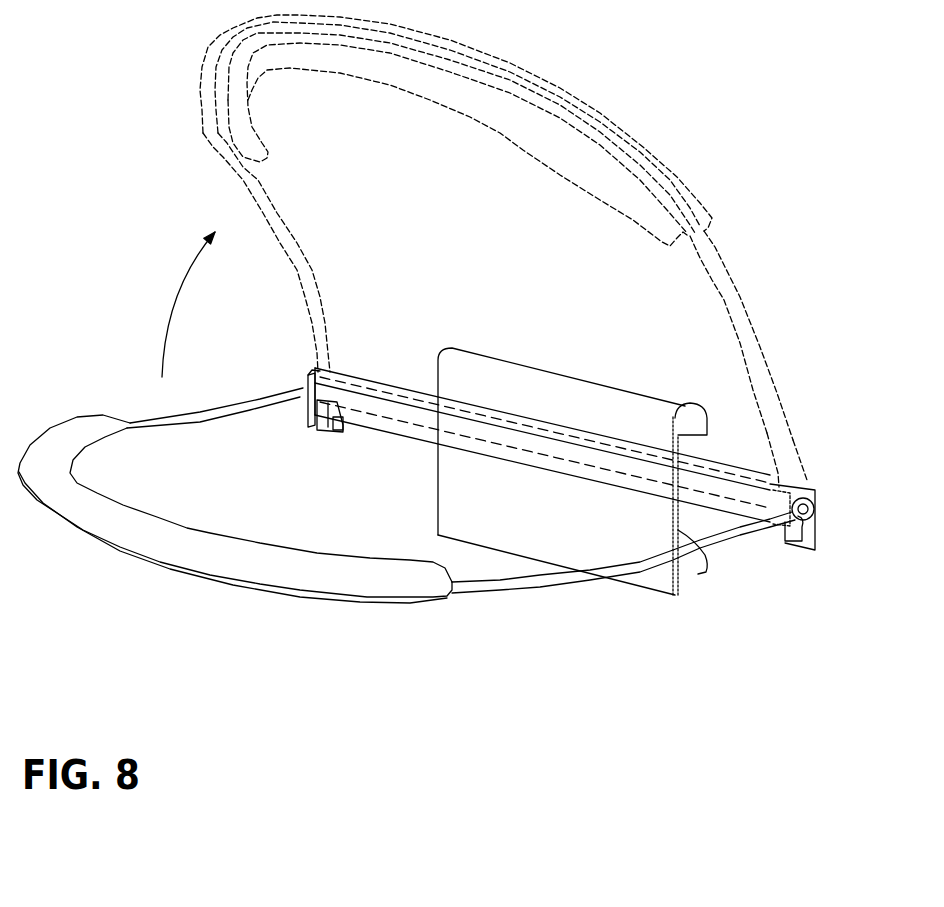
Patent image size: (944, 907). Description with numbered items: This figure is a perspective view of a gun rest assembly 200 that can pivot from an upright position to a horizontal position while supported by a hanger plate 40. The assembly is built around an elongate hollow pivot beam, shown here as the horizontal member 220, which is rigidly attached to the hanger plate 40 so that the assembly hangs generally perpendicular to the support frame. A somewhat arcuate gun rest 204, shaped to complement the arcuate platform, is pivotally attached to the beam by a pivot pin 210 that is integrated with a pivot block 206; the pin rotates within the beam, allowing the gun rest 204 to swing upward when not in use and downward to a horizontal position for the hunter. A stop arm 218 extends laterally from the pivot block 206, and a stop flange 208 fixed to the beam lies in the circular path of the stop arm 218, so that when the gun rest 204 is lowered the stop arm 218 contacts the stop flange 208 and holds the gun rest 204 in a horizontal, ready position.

The gun rest assembly 200 is at (62, 50).
The support bar 220 is at (395, 385).
The hanger plate 40 is at (590, 380).
The gun rest 204 is at (262, 590).
The stop flange 208 is at (297, 423).
The stop arm 218 is at (328, 432).
The pivot block 206 is at (805, 482).
The pivot pin 210 is at (778, 487).